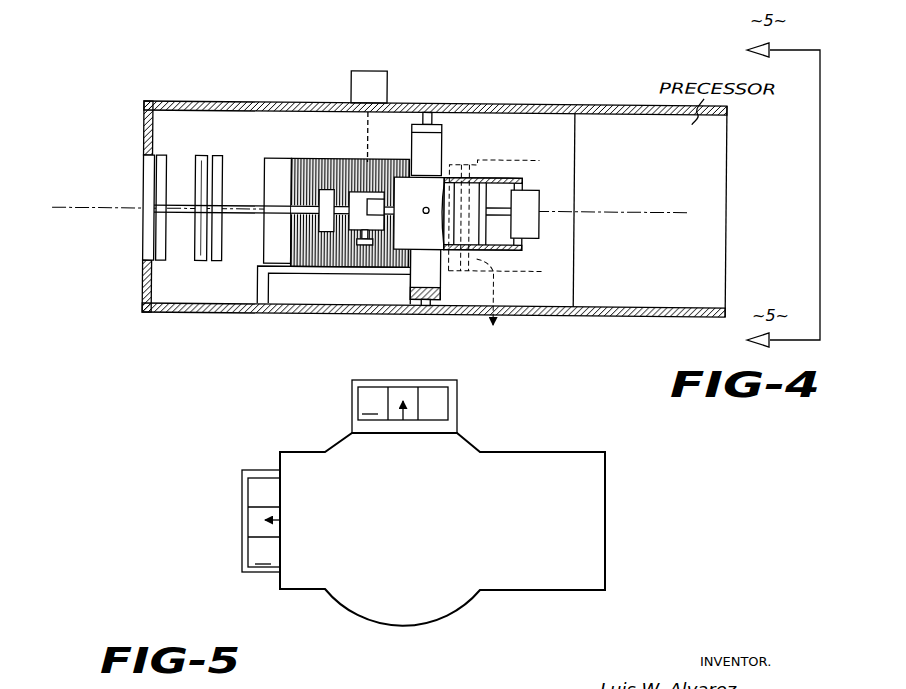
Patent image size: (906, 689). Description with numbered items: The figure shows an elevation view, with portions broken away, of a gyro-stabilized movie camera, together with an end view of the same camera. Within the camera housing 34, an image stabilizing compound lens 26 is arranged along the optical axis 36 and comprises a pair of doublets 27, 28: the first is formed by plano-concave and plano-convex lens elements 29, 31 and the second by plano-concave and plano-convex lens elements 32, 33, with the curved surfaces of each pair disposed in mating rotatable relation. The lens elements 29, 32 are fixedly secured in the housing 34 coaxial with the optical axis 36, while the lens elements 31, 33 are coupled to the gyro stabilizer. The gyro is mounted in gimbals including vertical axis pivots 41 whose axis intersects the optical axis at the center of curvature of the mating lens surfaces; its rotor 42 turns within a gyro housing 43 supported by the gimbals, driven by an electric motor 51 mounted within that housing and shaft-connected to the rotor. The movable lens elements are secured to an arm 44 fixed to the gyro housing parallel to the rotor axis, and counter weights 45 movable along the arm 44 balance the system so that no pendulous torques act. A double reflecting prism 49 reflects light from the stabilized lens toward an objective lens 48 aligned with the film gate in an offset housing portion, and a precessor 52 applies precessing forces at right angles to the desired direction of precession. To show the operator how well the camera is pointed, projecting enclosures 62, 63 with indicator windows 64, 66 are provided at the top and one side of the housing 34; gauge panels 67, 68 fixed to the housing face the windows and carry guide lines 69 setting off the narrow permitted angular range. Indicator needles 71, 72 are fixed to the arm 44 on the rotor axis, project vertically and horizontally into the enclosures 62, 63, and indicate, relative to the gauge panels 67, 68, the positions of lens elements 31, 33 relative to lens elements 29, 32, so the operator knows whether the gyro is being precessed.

In FIG. 4, the image stabilizing compound lens 26 is at (181, 148).
In FIG. 4, the doublet 27 is at (141, 249).
In FIG. 4, the doublet 28 is at (203, 268).
In FIG. 4, the plano-concave lens element 29 is at (145, 174).
In FIG. 4, the plano-convex lens element 31 is at (168, 188).
In FIG. 4, the plano-concave lens element 32 is at (203, 157).
In FIG. 4, the plano-convex lens element 33 is at (224, 188).
In FIG. 5, the housing 34 is at (477, 437).
In FIG. 4, the optical axis 36 is at (66, 204).
In FIG. 4, the vertical axis pivots 41 is at (420, 116).
In FIG. 4, the rotor 42 is at (530, 189).
In FIG. 4, the gyro housing 43 is at (501, 176).
In FIG. 4, the arm 44 is at (277, 207).
In FIG. 4, the counter weights 45 is at (327, 189).
In FIG. 4, the objective lens 48 is at (495, 251).
In FIG. 4, the double reflecting prism 49 is at (268, 157).
In FIG. 4, the electric motor 51 is at (470, 183).
In FIG. 4, the precessor 52 is at (725, 188).
In FIG. 4, the projecting enclosure 62 is at (362, 66).
In FIG. 5, the projecting enclosure 62 is at (463, 404).
In FIG. 5, the projecting enclosure 63 is at (253, 466).
In FIG. 5, the indicator window 64 is at (444, 390).
In FIG. 5, the indicator window 66 is at (251, 480).
In FIG. 5, the gauge panel 67 is at (371, 405).
In FIG. 5, the gauge panel 68 is at (264, 555).
In FIG. 5, the guide lines 69 is at (420, 388).
In FIG. 4, the indicator needle 71 is at (368, 119).
In FIG. 5, the indicator needle 71 is at (402, 407).
In FIG. 5, the indicator needle 72 is at (262, 520).